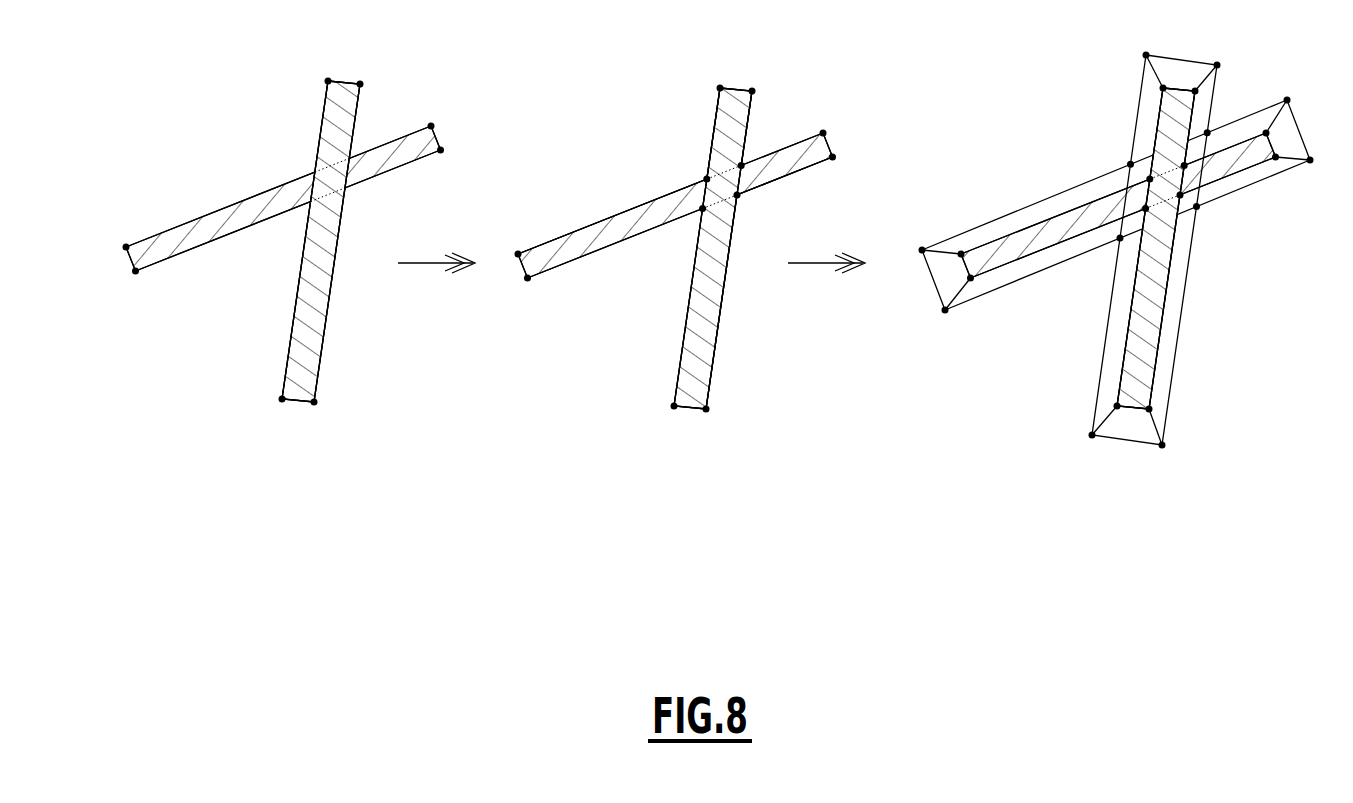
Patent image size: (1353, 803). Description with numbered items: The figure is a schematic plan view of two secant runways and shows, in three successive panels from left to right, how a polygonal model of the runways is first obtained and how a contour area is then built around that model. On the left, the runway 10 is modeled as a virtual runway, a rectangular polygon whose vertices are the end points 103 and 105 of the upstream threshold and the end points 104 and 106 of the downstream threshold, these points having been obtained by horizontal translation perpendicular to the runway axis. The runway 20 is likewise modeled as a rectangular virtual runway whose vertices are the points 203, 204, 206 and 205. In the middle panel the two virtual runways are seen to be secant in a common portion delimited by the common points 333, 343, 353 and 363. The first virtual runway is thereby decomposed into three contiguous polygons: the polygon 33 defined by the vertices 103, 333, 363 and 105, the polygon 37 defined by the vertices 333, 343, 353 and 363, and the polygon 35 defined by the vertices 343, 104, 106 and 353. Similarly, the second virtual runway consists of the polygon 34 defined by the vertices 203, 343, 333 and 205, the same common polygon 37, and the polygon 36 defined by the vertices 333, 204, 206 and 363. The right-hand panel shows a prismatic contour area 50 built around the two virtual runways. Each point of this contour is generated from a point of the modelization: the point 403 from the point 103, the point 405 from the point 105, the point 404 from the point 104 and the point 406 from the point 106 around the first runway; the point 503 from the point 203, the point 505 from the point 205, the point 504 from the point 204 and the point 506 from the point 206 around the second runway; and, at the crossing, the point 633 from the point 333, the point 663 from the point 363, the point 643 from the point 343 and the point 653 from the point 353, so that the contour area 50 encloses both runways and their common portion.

The runway 10 is at (212, 259).
The runway 20 is at (350, 298).
The end point of the upstream threshold 103 is at (137, 274).
The end point of the downstream threshold 104 is at (444, 149).
The end point of the upstream threshold 105 is at (124, 245).
The end point of the downstream threshold 106 is at (431, 123).
The vertex of the virtual runway 203 is at (315, 406).
The vertex of the virtual runway 204 is at (363, 82).
The vertex of the virtual runway 205 is at (280, 402).
The vertex of the virtual runway 206 is at (325, 79).
The polygon 33 is at (626, 225).
The polygon 34 is at (720, 324).
The polygon 35 is at (786, 178).
The polygon 36 is at (748, 123).
The polygon 37 is at (710, 160).
The common point 333 is at (700, 211).
The common point 343 is at (740, 198).
The common point 353 is at (744, 163).
The common point 363 is at (704, 177).
The prismatic contour area 50 is at (1090, 402).
The point 403 is at (946, 313).
The point 404 is at (1312, 163).
The point 405 is at (920, 249).
The point 406 is at (1289, 98).
The point 503 is at (1165, 446).
The point 504 is at (1217, 62).
The point 505 is at (1090, 437).
The point 506 is at (1146, 52).
The point 633 is at (1118, 241).
The point 643 is at (1199, 208).
The point 653 is at (1209, 130).
The point 663 is at (1128, 162).